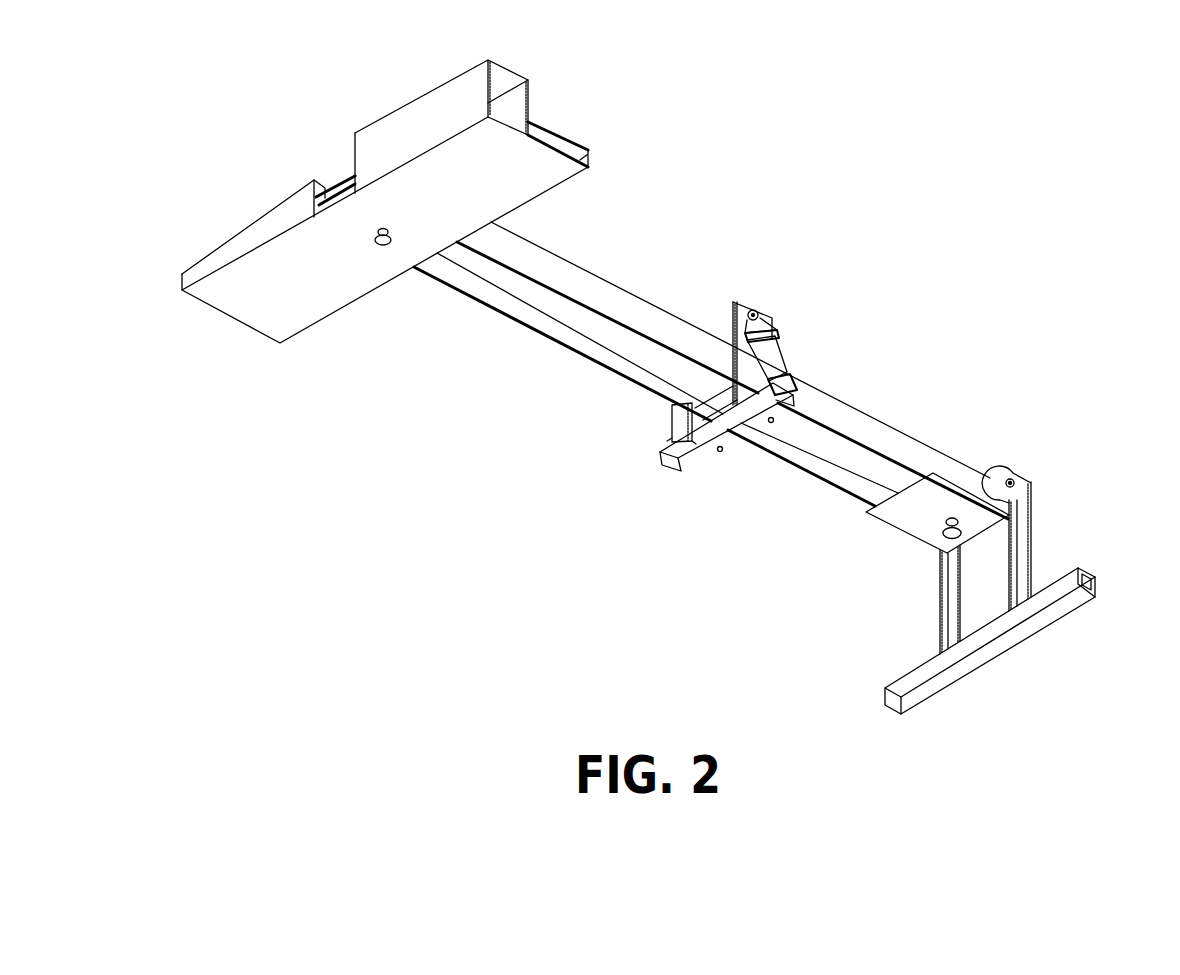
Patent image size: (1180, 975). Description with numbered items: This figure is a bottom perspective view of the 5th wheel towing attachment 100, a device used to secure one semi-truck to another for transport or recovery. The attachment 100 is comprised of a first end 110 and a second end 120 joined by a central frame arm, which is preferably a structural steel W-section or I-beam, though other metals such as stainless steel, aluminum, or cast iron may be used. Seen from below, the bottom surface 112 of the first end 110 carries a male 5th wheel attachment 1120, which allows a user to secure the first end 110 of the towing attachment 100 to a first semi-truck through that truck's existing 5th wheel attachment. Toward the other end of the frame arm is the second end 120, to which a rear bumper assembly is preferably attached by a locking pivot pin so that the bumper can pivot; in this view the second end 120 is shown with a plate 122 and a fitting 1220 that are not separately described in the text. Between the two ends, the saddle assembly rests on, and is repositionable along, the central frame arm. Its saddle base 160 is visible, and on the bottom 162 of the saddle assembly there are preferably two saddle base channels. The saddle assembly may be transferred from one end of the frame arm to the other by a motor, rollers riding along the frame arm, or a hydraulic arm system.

The 5th wheel towing attachment 100 is at (868, 165).
The first end 110 is at (295, 147).
The bottom surface 112 is at (262, 294).
The male 5th wheel attachment 1120 is at (387, 245).
The second end 120 is at (1046, 481).
The second positioning plate 122 is at (903, 517).
The second positioning knob 1220 is at (950, 538).
The saddle base 160 is at (711, 455).
The bottom 162 is at (690, 404).